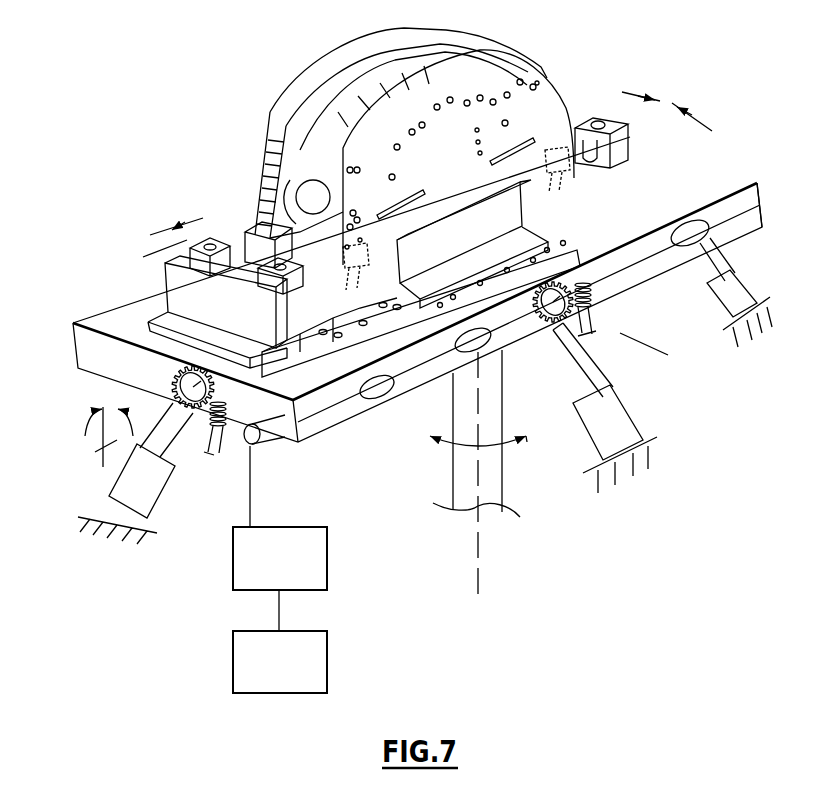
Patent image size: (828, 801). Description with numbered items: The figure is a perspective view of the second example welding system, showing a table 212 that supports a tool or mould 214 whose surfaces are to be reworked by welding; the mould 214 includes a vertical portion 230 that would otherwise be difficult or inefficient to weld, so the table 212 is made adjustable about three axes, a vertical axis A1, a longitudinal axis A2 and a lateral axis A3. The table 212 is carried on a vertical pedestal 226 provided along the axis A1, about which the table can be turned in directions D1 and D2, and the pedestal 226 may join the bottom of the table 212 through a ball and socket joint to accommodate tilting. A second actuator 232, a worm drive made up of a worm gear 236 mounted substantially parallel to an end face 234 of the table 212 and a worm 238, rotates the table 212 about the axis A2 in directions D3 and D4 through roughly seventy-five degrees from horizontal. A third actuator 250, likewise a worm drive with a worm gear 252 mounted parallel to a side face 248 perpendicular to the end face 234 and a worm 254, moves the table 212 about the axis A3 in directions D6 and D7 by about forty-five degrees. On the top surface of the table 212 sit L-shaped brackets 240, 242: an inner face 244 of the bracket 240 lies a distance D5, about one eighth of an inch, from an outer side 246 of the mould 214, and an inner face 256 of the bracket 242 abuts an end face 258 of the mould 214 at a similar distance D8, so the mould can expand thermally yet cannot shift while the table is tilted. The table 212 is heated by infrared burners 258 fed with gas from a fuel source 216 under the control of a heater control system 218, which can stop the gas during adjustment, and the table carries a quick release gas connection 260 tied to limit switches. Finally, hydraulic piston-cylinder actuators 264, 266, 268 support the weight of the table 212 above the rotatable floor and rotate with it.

The table 212 is at (148, 303).
The tool or mould 214 is at (260, 148).
The fuel source 216 is at (280, 641).
The heater control system 218 is at (280, 518).
The vertical pedestal 226 is at (505, 378).
The vertical portion 230 is at (332, 208).
The second actuator 232 is at (146, 375).
The end face 234 is at (100, 352).
The worm gear 236 is at (172, 373).
The worm 238 is at (260, 391).
The L-shaped bracket 240 is at (595, 190).
The L-shaped bracket 242 is at (145, 248).
The inner face 244 is at (468, 200).
The outer side 246 is at (480, 80).
The side face 248 is at (730, 217).
The third actuator 250 is at (605, 284).
The worm gear 252 is at (501, 340).
The worm 254 is at (638, 308).
The inner face 256 is at (248, 233).
The end face / infrared burners 258 is at (688, 228).
The quick release gas connection 260 is at (284, 442).
The actuator 264 is at (650, 417).
The actuator 266 is at (753, 268).
The actuator 268 is at (174, 492).
The first axis A1 is at (478, 577).
The second axis A2 is at (96, 455).
The third axis A3 is at (652, 355).
The direction D1 is at (522, 447).
The direction D2 is at (437, 446).
The direction D3 is at (85, 433).
The direction D4 is at (173, 415).
The distance D5 is at (696, 118).
The direction D6 is at (609, 316).
The direction D7 is at (657, 321).
The distance D8 is at (170, 228).